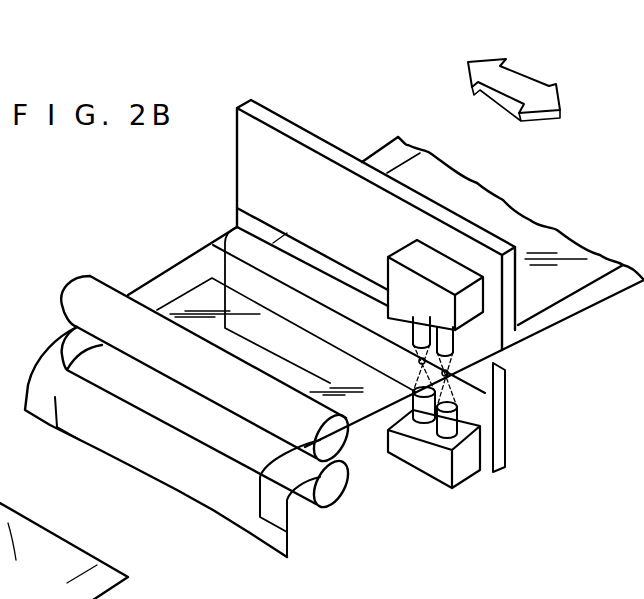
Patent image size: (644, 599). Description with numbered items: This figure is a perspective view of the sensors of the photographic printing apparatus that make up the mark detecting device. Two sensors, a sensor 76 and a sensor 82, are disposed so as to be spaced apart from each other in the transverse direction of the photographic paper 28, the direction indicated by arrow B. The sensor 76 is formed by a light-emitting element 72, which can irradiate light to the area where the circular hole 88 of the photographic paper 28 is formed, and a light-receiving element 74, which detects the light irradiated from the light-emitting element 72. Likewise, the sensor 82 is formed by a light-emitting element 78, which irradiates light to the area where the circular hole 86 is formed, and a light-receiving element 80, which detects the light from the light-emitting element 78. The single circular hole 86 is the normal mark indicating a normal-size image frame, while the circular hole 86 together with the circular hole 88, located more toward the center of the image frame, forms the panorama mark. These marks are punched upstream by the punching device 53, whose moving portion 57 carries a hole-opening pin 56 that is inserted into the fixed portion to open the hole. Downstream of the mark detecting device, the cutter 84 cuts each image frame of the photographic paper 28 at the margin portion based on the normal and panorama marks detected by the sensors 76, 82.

The cutter 84 is at (289, 106).
The circular hole 86 is at (500, 372).
The photographic paper 28 is at (363, 450).
The circular hole 88 is at (387, 372).
The sensor 76 is at (373, 195).
The light-emitting element 72 is at (411, 315).
The light-emitting element 78 is at (485, 355).
The light-receiving element 74 is at (413, 383).
The light-receiving element 80 is at (458, 404).
The sensor 82 is at (583, 338).
The moving portion 57 is at (0, 497).
The punching device 53 is at (63, 579).
The hole-opening pin 56 is at (9, 561).
The arrow B is at (523, 83).